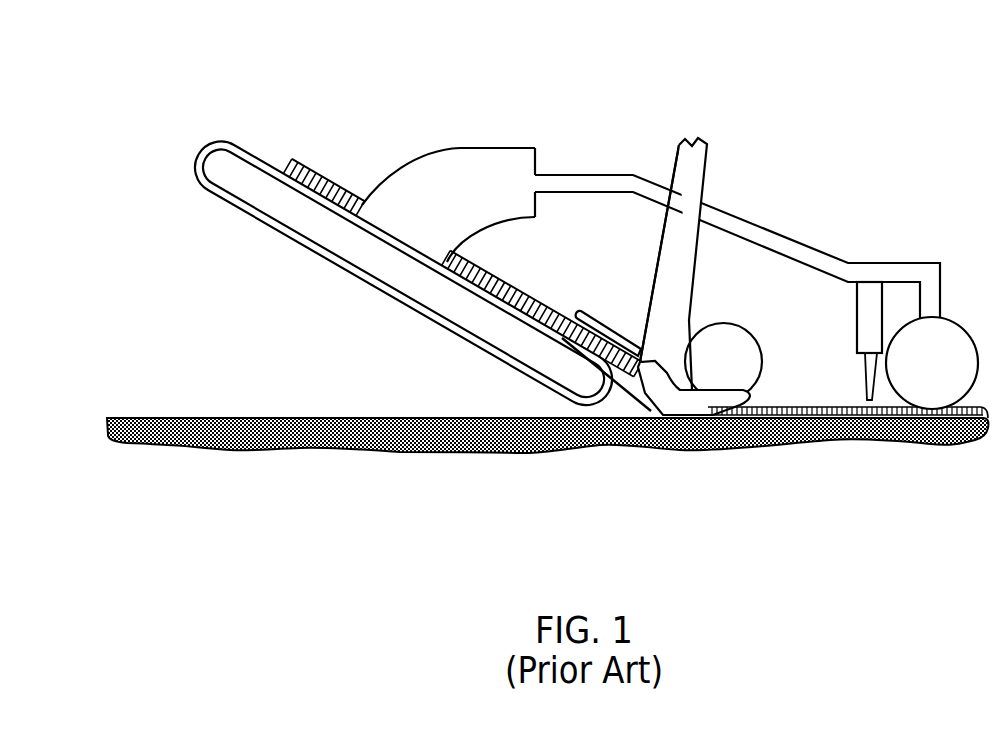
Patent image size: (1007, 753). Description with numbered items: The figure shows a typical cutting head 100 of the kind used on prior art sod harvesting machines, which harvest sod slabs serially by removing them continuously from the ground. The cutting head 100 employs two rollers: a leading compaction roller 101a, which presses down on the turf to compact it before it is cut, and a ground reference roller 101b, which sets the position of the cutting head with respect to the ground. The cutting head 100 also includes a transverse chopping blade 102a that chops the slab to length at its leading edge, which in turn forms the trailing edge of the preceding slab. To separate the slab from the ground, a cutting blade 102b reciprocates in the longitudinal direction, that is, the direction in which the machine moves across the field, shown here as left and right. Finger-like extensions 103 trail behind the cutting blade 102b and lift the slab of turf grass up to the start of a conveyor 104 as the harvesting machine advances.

The cutting head 100 is at (866, 143).
The leading compaction roller 101a is at (924, 412).
The ground reference roller 101b is at (750, 333).
The transverse chopping blade 102a is at (865, 382).
The cutting blade 102b is at (662, 418).
The finger-like extensions 103 is at (640, 392).
The conveyor 104 is at (552, 395).